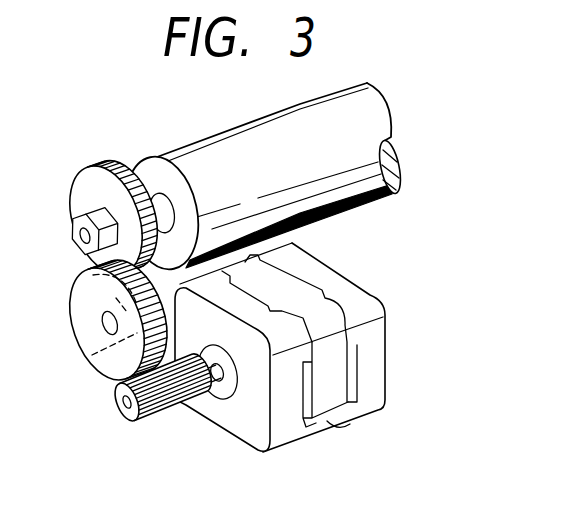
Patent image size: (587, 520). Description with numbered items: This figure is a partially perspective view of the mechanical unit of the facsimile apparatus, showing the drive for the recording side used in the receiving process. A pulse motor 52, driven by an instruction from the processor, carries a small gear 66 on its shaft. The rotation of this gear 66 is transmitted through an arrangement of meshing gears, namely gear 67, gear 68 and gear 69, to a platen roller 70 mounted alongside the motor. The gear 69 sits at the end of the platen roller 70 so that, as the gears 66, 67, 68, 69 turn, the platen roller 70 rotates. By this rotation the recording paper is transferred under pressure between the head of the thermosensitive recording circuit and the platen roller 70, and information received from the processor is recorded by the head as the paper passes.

The pulse motor 52 is at (222, 423).
The gear 66 is at (117, 402).
The gear 67 is at (76, 288).
The gear 68 is at (92, 355).
The gear 69 is at (91, 168).
The platen roller 70 is at (197, 142).